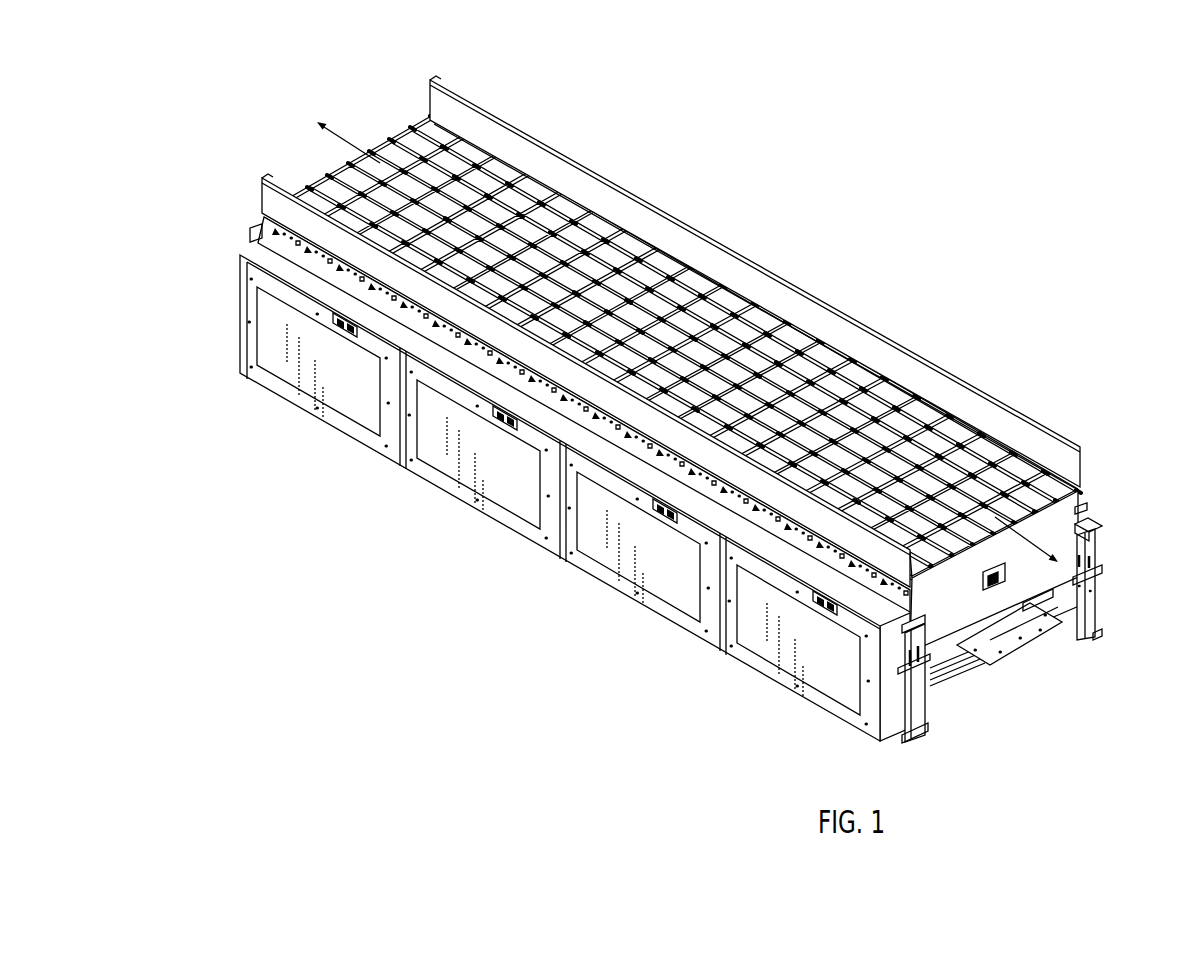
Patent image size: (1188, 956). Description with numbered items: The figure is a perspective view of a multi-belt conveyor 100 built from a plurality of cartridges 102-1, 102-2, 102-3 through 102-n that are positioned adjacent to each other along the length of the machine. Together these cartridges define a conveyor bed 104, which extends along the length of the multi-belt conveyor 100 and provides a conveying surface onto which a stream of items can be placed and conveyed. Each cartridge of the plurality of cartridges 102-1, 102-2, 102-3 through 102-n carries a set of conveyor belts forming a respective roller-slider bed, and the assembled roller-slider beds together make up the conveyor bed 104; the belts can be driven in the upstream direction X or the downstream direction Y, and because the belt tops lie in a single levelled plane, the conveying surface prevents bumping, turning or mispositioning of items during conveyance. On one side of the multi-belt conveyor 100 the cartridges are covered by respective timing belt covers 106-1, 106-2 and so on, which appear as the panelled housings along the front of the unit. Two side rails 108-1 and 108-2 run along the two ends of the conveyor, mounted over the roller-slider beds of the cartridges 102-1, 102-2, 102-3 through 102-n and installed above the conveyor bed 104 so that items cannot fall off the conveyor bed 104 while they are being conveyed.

The multi-belt conveyor 100 is at (654, 390).
The cartridge 102-1 is at (1055, 471).
The cartridge 102-2 is at (1017, 455).
The cartridge 102-3 is at (985, 436).
The cartridge 102-n is at (447, 118).
The conveyor bed 104 is at (687, 313).
The timing belt cover 106-1 is at (502, 497).
The timing belt cover 106-2 is at (1105, 484).
The side rail 108-1 is at (278, 219).
The side rail 108-2 is at (428, 96).